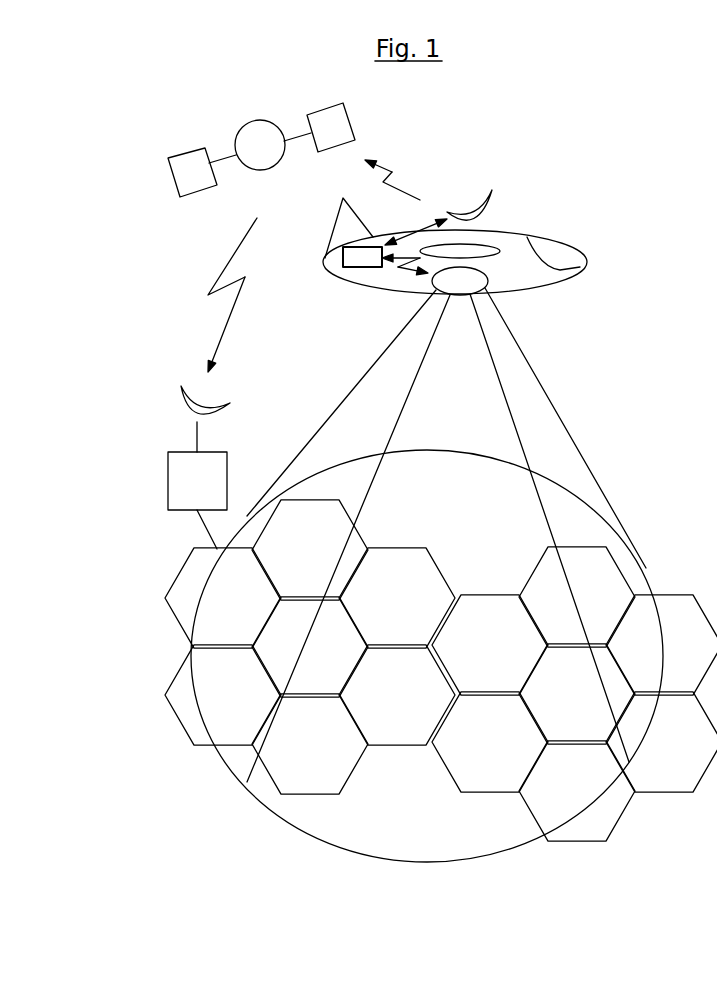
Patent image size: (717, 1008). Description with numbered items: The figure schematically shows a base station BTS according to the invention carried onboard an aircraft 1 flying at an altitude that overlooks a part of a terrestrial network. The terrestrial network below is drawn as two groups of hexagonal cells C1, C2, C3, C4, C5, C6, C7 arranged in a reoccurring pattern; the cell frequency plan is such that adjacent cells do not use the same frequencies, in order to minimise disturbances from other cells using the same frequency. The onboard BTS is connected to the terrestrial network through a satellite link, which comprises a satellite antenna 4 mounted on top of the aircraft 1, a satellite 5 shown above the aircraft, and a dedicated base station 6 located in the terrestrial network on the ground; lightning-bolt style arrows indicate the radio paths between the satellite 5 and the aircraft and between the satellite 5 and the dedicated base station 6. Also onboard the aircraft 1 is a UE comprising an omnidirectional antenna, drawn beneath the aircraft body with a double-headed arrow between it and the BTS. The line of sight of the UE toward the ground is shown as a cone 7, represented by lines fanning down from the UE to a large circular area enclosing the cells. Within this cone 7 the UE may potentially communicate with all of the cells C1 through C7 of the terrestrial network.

The aircraft 1 is at (353, 247).
The satellite antenna 4 is at (513, 196).
The satellite 5 is at (148, 193).
The dedicated base station 6 is at (160, 469).
The cone 7 is at (441, 575).
The base station BTS is at (361, 259).
The element UE is at (474, 288).
The cell C1 is at (290, 667).
The cell C2 is at (203, 715).
The cell C3 is at (203, 618).
The cell C4 is at (290, 570).
The cell C5 is at (290, 764).
The cell C6 is at (377, 618).
The cell C7 is at (377, 715).